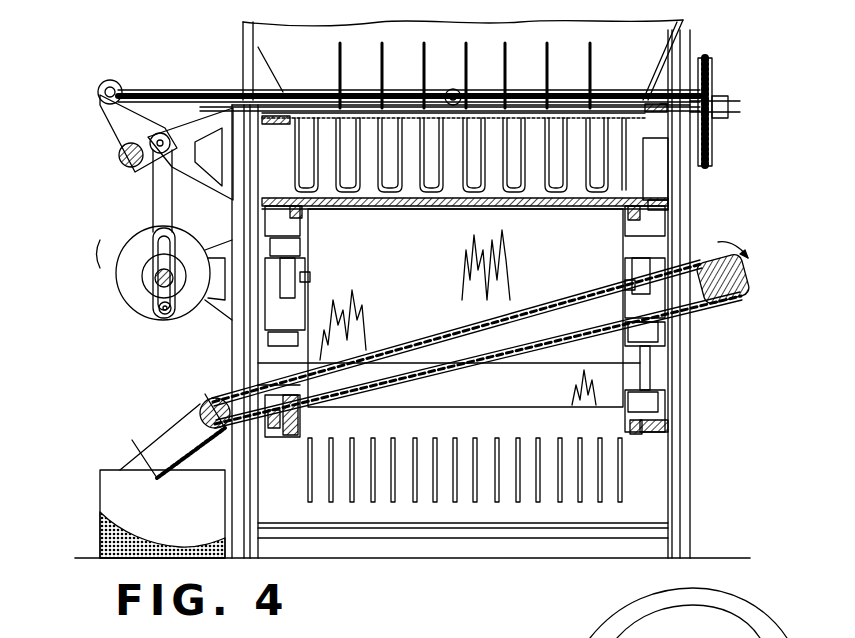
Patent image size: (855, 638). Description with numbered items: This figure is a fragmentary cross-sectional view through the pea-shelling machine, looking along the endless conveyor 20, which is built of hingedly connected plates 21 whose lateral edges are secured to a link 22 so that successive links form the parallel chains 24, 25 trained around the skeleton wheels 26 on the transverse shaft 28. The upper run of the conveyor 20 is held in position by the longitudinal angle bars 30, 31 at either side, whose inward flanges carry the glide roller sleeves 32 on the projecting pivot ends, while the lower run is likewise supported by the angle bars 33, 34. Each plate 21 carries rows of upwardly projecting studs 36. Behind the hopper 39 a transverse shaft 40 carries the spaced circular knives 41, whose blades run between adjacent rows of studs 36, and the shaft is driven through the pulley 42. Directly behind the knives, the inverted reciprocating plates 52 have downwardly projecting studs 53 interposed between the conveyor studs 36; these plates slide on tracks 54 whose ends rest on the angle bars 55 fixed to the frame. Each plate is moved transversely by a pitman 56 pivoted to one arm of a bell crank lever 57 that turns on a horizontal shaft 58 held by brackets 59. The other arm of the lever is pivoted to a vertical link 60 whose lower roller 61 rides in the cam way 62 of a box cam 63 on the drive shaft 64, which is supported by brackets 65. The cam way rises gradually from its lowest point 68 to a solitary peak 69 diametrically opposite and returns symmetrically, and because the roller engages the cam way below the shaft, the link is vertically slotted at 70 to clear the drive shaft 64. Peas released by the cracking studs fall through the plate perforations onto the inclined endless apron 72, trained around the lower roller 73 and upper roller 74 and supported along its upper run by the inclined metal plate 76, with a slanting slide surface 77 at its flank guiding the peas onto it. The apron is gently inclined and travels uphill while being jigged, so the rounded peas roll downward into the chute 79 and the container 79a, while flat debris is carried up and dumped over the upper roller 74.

The endless conveyor 20 is at (630, 183).
The plates 21 is at (398, 203).
The link 22 is at (300, 233).
The chain 24 is at (648, 360).
The chain 25 is at (280, 363).
The star or skeleton wheels 26 is at (305, 262).
The transverse shaft 28 is at (310, 278).
The angle bar 30 is at (680, 197).
The angle bar 31 is at (262, 200).
The glide roller sleeves 32 is at (265, 213).
The angle bar 33 is at (450, 128).
The angle bar 34 is at (295, 440).
The pins or studs 36 is at (310, 502).
The hopper 39 is at (268, 26).
The transverse shaft 40 is at (730, 108).
The circular knives 41 is at (340, 58).
The pulley 42 is at (712, 63).
The reciprocating plates 52 is at (283, 95).
The studs 53 is at (520, 125).
The tracks 54 is at (648, 115).
The angle bars 55 is at (225, 112).
The connecting rod or pitman 56 is at (148, 90).
The bell crank lever 57 is at (120, 127).
The shaft 58 is at (120, 160).
The brackets 59 is at (150, 180).
The vertical link 60 is at (155, 192).
The roller 61 is at (150, 318).
The cam way 62 is at (148, 283).
The box cam 63 is at (122, 302).
The drive shaft 64 is at (155, 276).
The brackets 65 is at (190, 318).
The lowest point 68 is at (162, 324).
The peak 69 is at (178, 238).
The vertical slot 70 is at (158, 262).
The endless apron 72 is at (418, 380).
The lower roller 73 is at (185, 415).
The upper roller 74 is at (748, 282).
The inclined metal plate 76 is at (265, 388).
The slanting slide surface 77 is at (432, 284).
The chute 79 is at (148, 440).
The container 79a is at (120, 502).